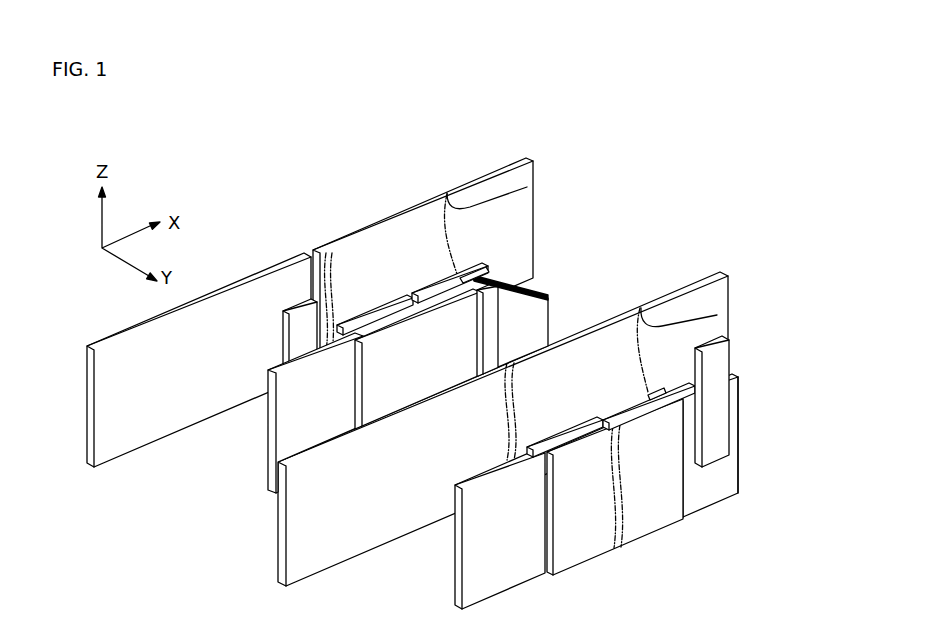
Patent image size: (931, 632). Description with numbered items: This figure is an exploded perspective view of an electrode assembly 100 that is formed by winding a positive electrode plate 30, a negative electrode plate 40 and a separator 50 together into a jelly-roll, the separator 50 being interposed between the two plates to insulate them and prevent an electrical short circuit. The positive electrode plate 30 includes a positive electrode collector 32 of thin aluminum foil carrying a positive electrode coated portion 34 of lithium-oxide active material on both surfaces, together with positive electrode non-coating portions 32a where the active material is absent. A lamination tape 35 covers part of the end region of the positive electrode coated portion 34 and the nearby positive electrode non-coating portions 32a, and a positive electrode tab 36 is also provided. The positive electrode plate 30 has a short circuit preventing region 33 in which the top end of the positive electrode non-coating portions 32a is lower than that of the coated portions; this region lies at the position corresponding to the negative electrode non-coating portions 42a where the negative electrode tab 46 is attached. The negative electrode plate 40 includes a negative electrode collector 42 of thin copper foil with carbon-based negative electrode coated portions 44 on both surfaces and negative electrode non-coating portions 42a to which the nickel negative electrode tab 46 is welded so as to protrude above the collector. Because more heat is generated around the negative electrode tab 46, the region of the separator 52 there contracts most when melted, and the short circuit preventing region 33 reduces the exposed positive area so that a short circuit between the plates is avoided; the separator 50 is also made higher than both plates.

The electrode assembly 100 is at (262, 188).
The positive electrode plate 30 is at (369, 297).
The positive electrode collector 32 is at (433, 293).
The positive electrode non-coating portions 32a is at (269, 432).
The positive electrode coated portion 34 is at (459, 278).
The lamination tape 35 is at (527, 320).
The short circuit preventing region 33 is at (550, 280).
The positive electrode tab 36 is at (297, 300).
The negative electrode plate 40 is at (677, 549).
The negative electrode collector 42 is at (731, 369).
The negative electrode non-coating portions 42a is at (734, 447).
The negative electrode coated portions 44 is at (653, 393).
The negative electrode tab 46 is at (721, 338).
The separator 50 is at (524, 157).
The separator 52 is at (533, 176).